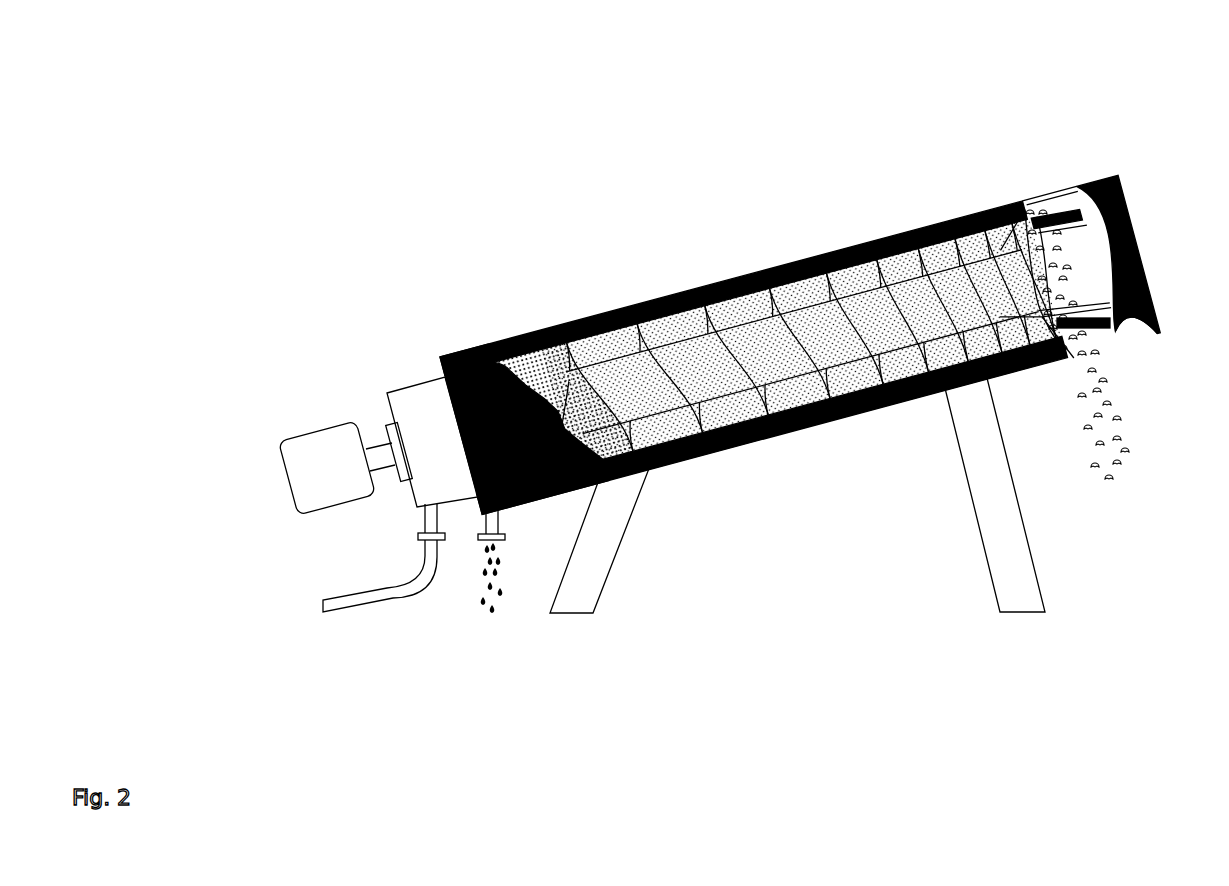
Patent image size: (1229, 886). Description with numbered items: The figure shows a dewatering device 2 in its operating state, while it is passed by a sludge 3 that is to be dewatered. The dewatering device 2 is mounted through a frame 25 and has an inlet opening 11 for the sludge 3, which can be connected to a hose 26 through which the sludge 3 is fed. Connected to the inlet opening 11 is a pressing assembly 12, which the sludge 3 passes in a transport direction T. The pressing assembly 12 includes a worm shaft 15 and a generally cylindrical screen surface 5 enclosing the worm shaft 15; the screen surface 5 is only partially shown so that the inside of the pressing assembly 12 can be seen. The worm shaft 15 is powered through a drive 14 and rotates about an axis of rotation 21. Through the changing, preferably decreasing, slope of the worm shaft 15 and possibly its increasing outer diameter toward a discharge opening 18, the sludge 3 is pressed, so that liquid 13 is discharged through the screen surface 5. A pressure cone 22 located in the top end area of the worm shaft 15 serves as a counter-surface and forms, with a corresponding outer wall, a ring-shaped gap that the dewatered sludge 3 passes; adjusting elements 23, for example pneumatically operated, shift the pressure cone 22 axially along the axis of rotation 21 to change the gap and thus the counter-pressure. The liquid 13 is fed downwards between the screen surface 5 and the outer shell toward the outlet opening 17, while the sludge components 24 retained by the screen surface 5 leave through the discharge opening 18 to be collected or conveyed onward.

The dewatering device 2 is at (718, 315).
The sludge 3 is at (791, 314).
The screen surface 5 is at (522, 360).
The inlet opening 11 is at (430, 520).
The pressing assembly 12 is at (848, 200).
The liquid 13 is at (487, 612).
The drive 14 is at (322, 448).
The worm shaft 15 is at (605, 347).
The outlet opening 17 is at (505, 540).
The discharge opening 18 is at (1107, 327).
The axis of rotation 21 is at (390, 447).
The pressure cone 22 is at (1023, 207).
The adjusting elements 23 is at (1067, 227).
The sludge components 24 is at (1110, 480).
The frame 25 is at (600, 583).
The hose 26 is at (323, 609).
The transport direction T is at (657, 33).